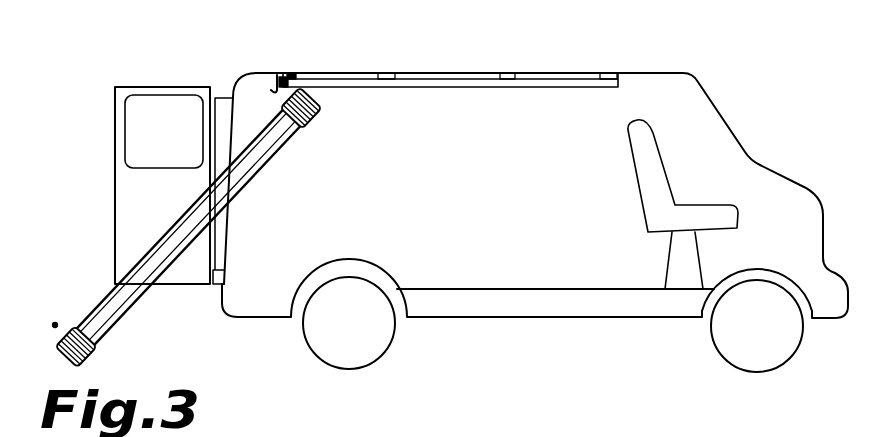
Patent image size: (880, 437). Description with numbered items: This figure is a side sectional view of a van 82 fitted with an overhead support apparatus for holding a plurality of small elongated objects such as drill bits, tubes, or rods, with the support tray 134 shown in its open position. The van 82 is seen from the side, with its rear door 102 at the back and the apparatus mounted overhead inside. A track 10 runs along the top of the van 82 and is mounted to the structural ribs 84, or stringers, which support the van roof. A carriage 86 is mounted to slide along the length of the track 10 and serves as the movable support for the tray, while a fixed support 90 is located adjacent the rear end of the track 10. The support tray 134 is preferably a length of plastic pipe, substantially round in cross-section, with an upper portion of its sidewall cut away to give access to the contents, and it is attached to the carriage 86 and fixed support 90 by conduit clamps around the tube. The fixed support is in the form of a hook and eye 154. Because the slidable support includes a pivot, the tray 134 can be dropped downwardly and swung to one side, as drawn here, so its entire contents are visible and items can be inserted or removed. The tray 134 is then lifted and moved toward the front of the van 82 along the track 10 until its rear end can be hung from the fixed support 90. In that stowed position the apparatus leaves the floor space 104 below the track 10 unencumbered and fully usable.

The van 82 is at (708, 82).
The rear door 102 is at (227, 117).
The floor space 104 is at (452, 288).
The track 10 is at (542, 84).
The structural ribs 84 is at (292, 73).
The carriage 86 is at (280, 75).
The fixed support 90 is at (273, 95).
The support tray 134 is at (192, 239).
The eye 154 is at (55, 323).